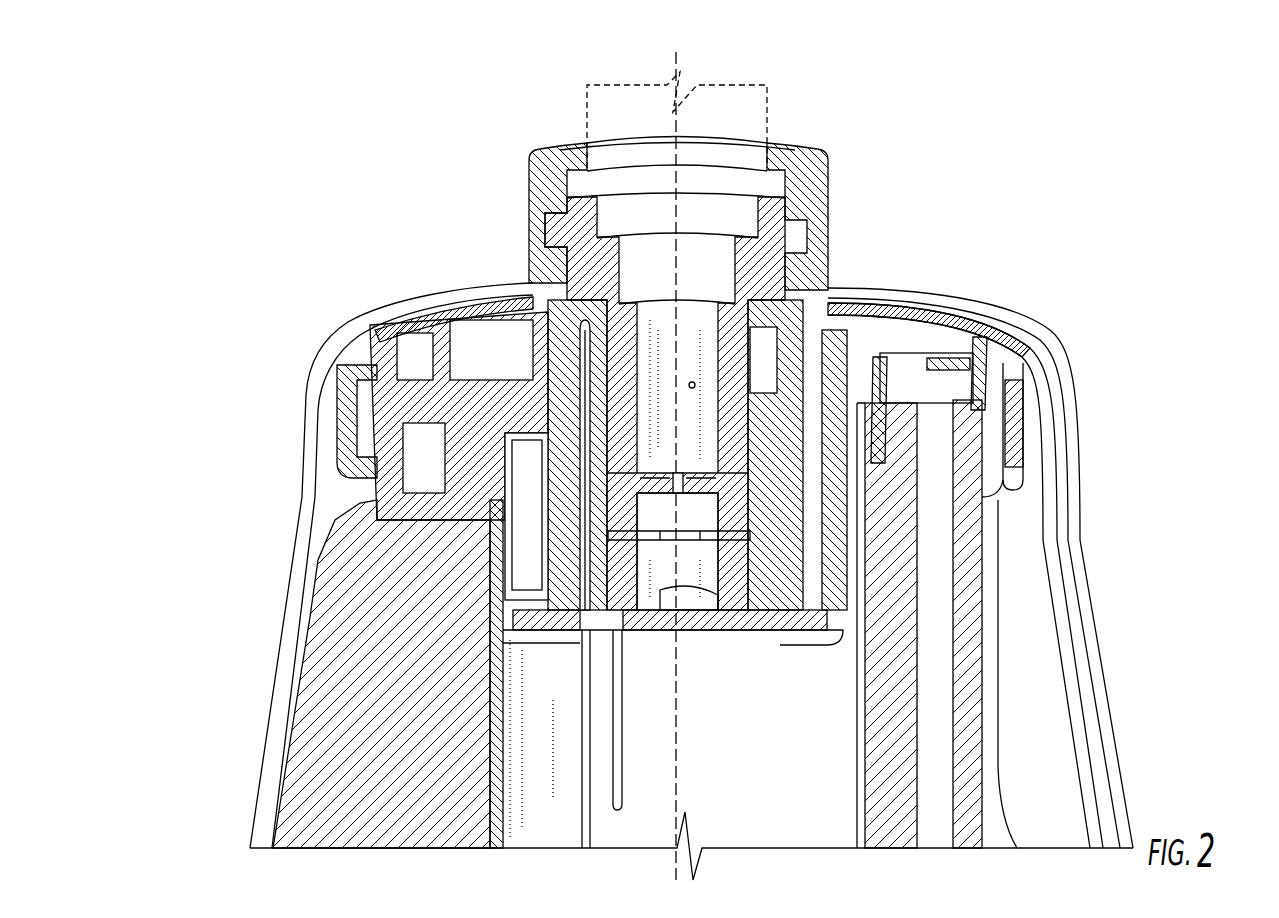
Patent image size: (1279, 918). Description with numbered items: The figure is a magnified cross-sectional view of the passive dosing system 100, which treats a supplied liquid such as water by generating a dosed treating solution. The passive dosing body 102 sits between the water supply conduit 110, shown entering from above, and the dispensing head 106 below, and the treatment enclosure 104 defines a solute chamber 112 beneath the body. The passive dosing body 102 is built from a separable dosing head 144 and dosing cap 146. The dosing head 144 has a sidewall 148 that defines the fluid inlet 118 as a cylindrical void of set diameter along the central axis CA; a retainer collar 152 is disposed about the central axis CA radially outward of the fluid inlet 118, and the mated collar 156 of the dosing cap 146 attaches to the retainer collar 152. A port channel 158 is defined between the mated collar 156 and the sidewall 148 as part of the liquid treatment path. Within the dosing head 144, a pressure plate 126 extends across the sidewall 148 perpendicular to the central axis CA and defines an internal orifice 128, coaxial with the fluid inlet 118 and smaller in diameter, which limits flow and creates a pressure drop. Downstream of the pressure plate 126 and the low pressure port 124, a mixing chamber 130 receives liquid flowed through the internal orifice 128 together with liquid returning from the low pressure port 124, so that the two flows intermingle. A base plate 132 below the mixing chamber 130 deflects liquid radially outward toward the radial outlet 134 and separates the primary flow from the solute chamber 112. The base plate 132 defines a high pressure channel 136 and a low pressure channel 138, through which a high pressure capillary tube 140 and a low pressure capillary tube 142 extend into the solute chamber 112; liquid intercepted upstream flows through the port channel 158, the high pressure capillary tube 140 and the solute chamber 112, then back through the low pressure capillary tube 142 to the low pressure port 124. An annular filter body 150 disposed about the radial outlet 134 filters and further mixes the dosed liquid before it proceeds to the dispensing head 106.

The passive dosing system 100 is at (1045, 188).
The passive dosing body 102 is at (855, 336).
The treatment enclosure 104 is at (862, 809).
The dispensing head 106 is at (292, 668).
The water supply conduit 110 is at (587, 118).
The solute chamber 112 is at (772, 762).
The fluid inlet 118 is at (640, 311).
The low pressure port 124 is at (605, 544).
The pressure plate 126 is at (689, 490).
The internal orifice 128 is at (700, 489).
The mixing chamber 130 is at (712, 562).
The base plate 132 is at (721, 613).
The radial outlet 134 is at (795, 634).
The high pressure channel 136 is at (575, 631).
The low pressure channel 138 is at (627, 635).
The high pressure capillary tube 140 is at (582, 752).
The low pressure capillary tube 142 is at (620, 725).
The dosing head 144 is at (655, 313).
The dosing cap 146 is at (558, 432).
The sidewall 148 is at (840, 312).
The filter body 150 is at (528, 522).
The retainer collar 152 is at (822, 297).
The mated collar 156 is at (618, 352).
The port channel 158 is at (591, 361).
The central axis CA is at (683, 62).